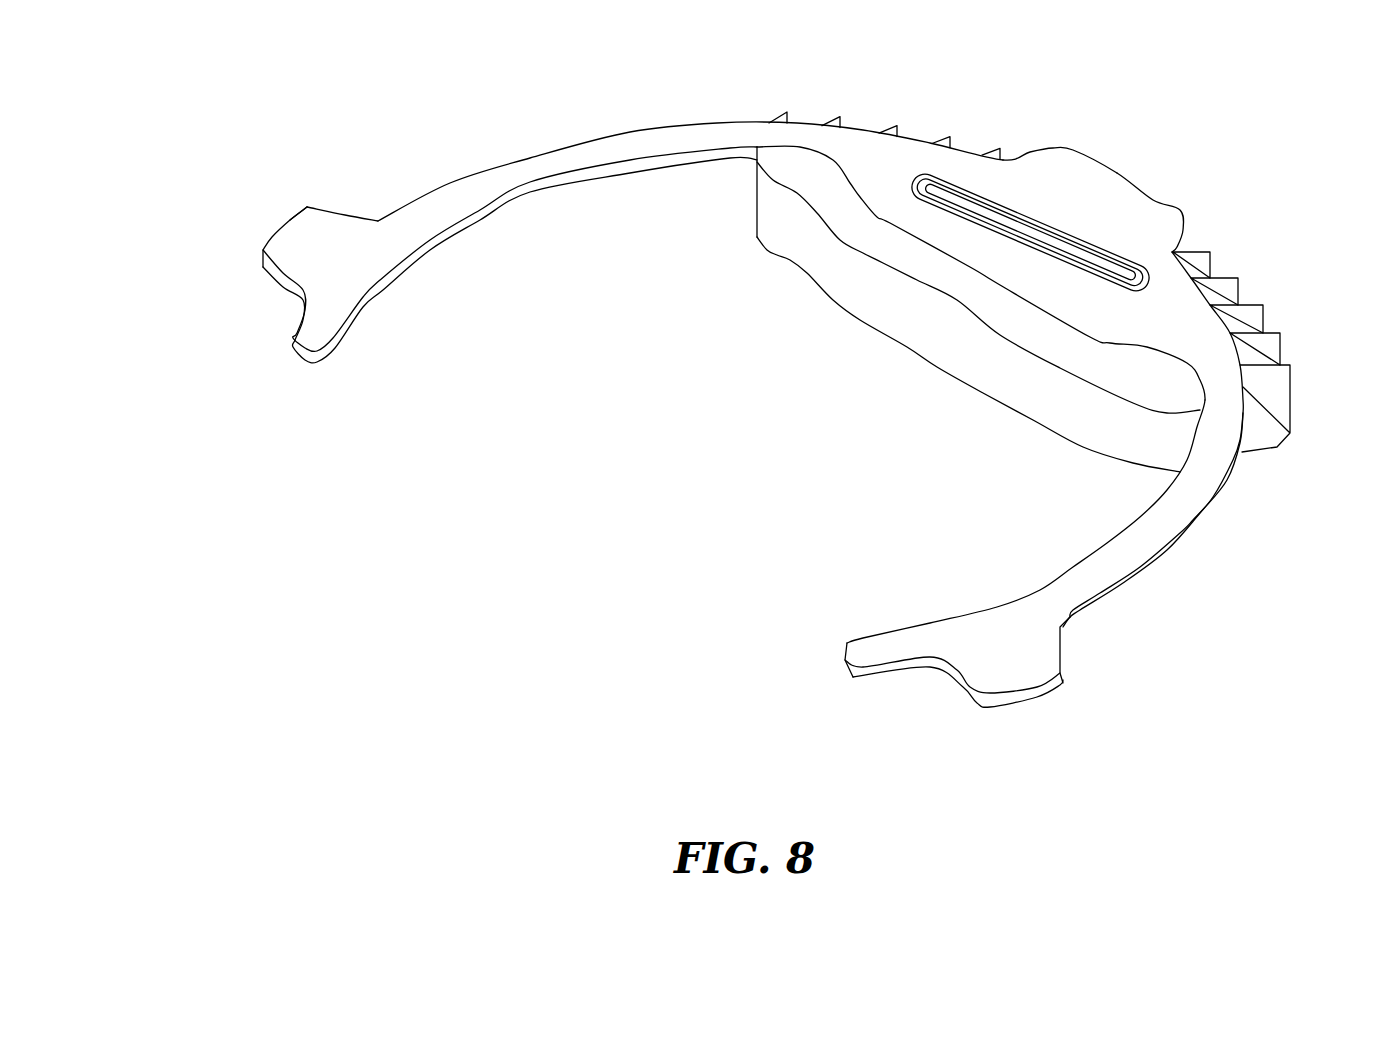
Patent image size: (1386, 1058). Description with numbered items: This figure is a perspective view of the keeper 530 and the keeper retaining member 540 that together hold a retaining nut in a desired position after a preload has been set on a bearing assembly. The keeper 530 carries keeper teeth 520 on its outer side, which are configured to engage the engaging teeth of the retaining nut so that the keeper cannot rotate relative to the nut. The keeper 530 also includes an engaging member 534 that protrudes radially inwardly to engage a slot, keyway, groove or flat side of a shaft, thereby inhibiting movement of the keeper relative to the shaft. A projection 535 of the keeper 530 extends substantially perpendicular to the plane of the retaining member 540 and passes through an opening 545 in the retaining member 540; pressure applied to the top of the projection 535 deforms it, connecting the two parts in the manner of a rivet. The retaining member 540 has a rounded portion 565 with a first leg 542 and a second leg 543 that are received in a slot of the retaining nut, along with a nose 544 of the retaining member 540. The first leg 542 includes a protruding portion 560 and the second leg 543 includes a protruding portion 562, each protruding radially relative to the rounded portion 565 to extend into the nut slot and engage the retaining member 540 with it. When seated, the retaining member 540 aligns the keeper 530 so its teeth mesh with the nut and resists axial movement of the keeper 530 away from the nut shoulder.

The keeper teeth 520 is at (1207, 252).
The keeper 530 is at (910, 220).
The engaging member 534 is at (907, 347).
The projection 535 is at (963, 193).
The keeper retaining member 540 is at (1158, 215).
The first leg 542 is at (263, 252).
The second leg 543 is at (1033, 690).
The nose 544 is at (1068, 167).
The opening 545 is at (1057, 263).
The protruding portion 560 is at (307, 207).
The protruding portion 562 is at (1060, 653).
The rounded portion 565 is at (448, 187).